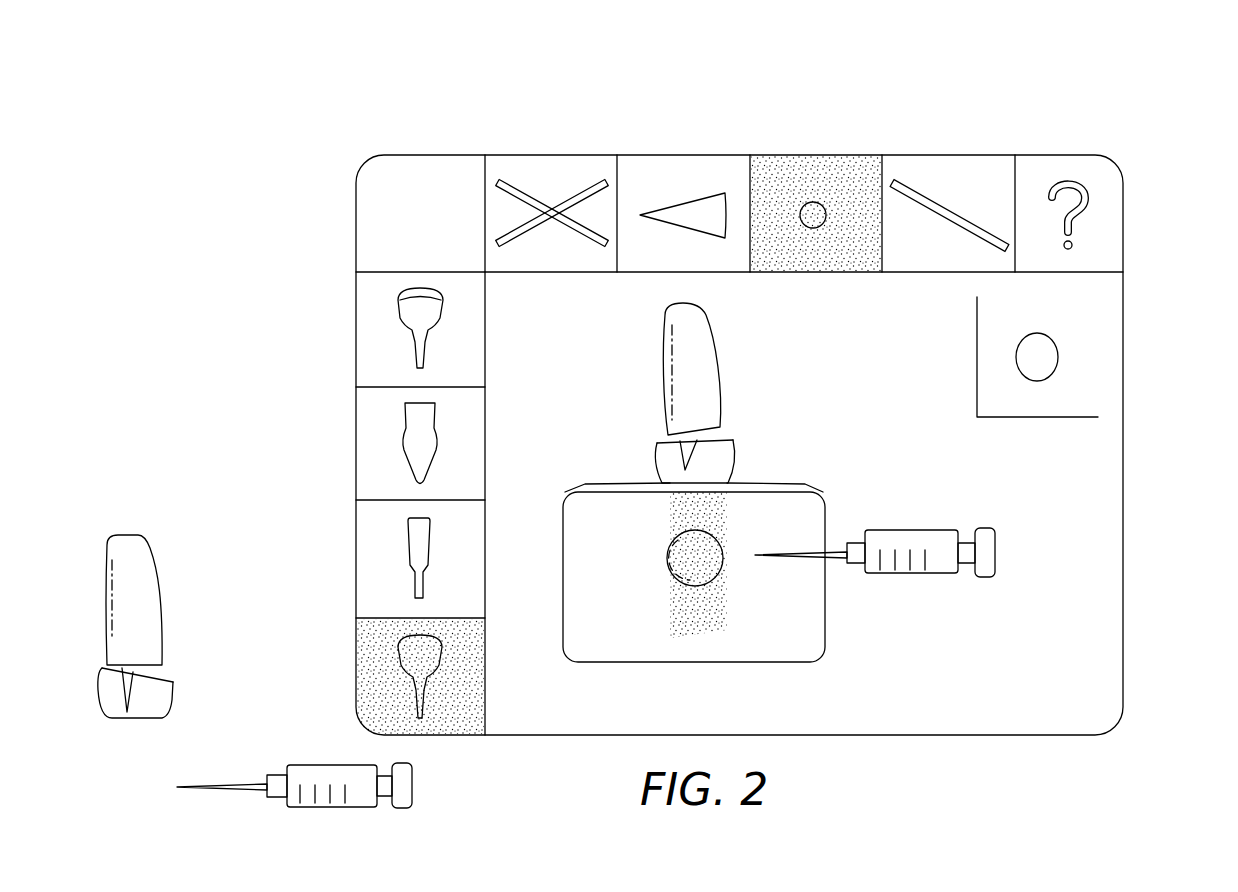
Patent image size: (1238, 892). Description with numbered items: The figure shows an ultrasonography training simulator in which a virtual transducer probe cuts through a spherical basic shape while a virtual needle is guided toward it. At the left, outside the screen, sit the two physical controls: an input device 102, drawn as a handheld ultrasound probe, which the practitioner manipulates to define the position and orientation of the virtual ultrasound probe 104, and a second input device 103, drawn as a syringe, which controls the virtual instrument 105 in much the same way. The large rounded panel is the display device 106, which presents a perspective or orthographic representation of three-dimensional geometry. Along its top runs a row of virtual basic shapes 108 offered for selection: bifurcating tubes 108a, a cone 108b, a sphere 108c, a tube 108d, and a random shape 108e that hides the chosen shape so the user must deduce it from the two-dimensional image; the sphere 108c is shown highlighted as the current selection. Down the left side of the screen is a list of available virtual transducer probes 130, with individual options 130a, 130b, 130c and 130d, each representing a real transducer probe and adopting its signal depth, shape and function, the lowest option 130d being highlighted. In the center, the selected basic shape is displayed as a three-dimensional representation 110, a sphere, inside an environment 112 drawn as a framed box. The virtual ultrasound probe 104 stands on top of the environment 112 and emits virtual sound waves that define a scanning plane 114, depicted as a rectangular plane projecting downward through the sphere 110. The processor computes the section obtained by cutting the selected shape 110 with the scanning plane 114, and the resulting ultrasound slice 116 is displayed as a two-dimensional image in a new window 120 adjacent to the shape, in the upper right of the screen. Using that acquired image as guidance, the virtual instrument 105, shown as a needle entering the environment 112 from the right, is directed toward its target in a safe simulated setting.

The input device 102 is at (142, 562).
The second input device 103 is at (330, 772).
The virtual ultrasound probe 104 is at (702, 333).
The virtual instrument 105 is at (910, 540).
The display device 106 is at (1113, 168).
The virtual basic shapes 108 is at (1015, 100).
The bifurcating tubes 108a is at (575, 175).
The cone 108b is at (707, 177).
The sphere 108c is at (835, 177).
The tube 108d is at (967, 177).
The random shape 108e is at (1097, 177).
The 3D representation of virtual basic shape 110 is at (695, 558).
The environment 112 is at (610, 662).
The scanning plane 114 is at (695, 510).
The ultrasound slice 116 is at (1038, 381).
The new window 120 is at (985, 316).
The virtual transducer probes 130 is at (270, 735).
The virtual transducer probe 130a is at (383, 325).
The virtual transducer probe 130b is at (383, 438).
The virtual transducer probe 130c is at (383, 555).
The virtual transducer probe 130d is at (383, 672).